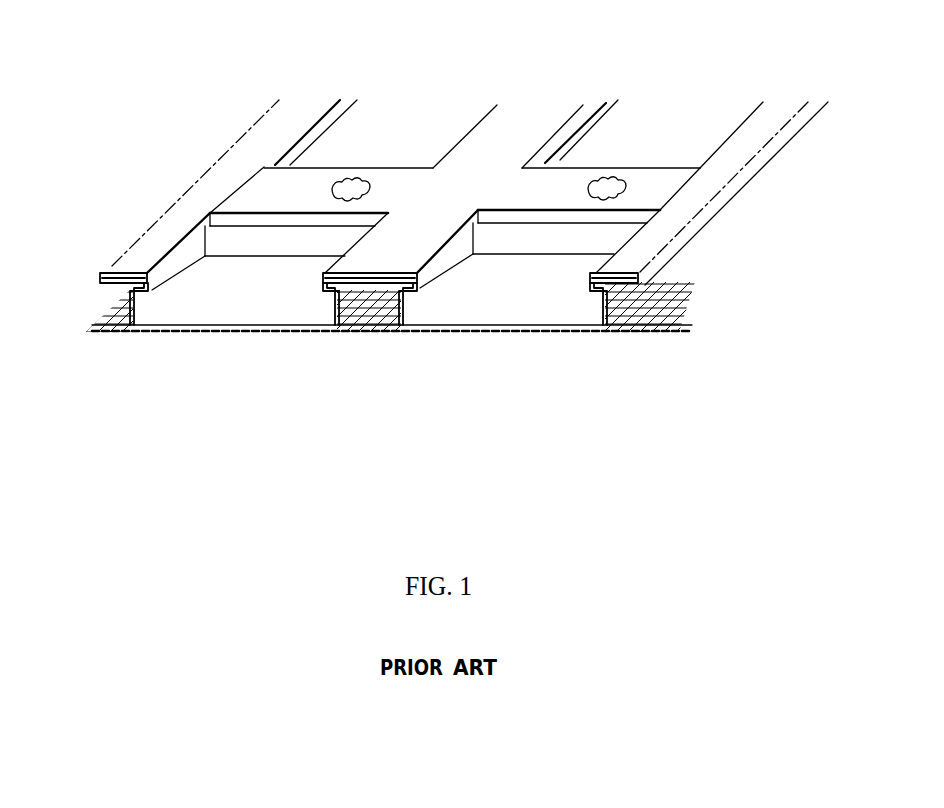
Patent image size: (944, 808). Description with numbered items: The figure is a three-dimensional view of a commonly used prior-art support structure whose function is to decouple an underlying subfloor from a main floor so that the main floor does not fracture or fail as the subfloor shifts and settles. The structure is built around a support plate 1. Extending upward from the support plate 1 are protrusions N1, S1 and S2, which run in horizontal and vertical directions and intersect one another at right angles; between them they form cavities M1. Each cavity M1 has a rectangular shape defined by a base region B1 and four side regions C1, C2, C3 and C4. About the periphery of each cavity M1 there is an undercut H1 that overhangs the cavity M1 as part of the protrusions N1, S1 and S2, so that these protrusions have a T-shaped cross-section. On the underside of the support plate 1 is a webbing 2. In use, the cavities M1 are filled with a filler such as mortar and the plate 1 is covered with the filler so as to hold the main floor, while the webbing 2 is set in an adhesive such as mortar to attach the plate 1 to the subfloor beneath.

The support plate 1 is at (128, 194).
The webbing 2 is at (690, 300).
The protrusion S1 is at (470, 132).
The protrusion S2 is at (247, 172).
The undercut H1 is at (612, 113).
The cavity M1 is at (571, 381).
The base region B1 is at (723, 128).
The protrusion N1 is at (358, 345).
The side region C1 is at (143, 358).
The side region C2 is at (537, 232).
The side region C3 is at (663, 353).
The side region C4 is at (357, 188).